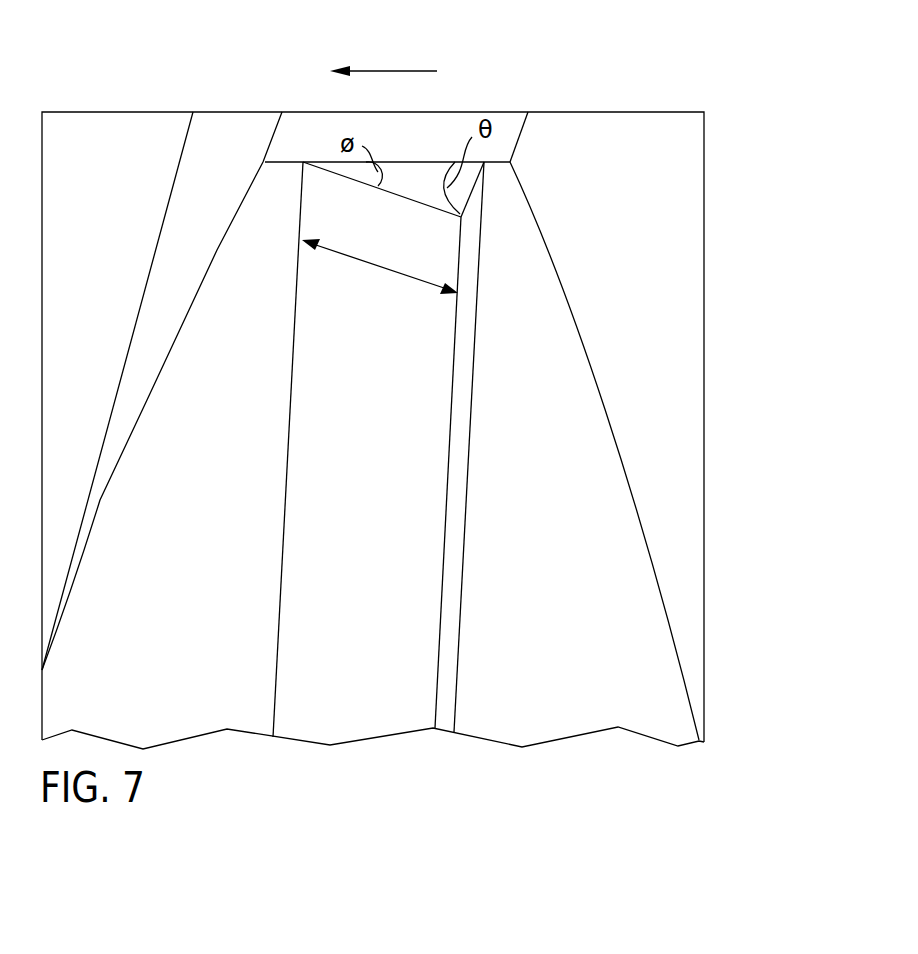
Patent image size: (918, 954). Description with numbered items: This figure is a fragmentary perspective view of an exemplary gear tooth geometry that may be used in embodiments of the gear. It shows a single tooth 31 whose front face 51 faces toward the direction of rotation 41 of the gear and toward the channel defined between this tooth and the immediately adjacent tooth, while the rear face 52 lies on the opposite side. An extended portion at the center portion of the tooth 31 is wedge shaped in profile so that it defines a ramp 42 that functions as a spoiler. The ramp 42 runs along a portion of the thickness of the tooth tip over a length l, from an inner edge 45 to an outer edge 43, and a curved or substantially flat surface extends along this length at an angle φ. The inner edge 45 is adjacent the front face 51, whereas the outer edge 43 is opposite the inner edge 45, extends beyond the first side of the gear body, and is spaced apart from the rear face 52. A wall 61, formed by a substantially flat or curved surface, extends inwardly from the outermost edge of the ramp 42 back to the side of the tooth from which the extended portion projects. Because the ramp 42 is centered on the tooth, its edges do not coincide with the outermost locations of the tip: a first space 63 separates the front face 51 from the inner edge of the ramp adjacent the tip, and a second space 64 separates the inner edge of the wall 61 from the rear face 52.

The tooth 31 is at (716, 390).
The direction of rotation 41 is at (375, 70).
The ramp 42 is at (317, 449).
The outer edge 43 is at (447, 539).
The inner edge 45 is at (287, 453).
The front face 51 is at (228, 147).
The rear face 52 is at (540, 148).
The wall 61 is at (499, 447).
The first space 63 is at (270, 213).
The second space 64 is at (518, 238).